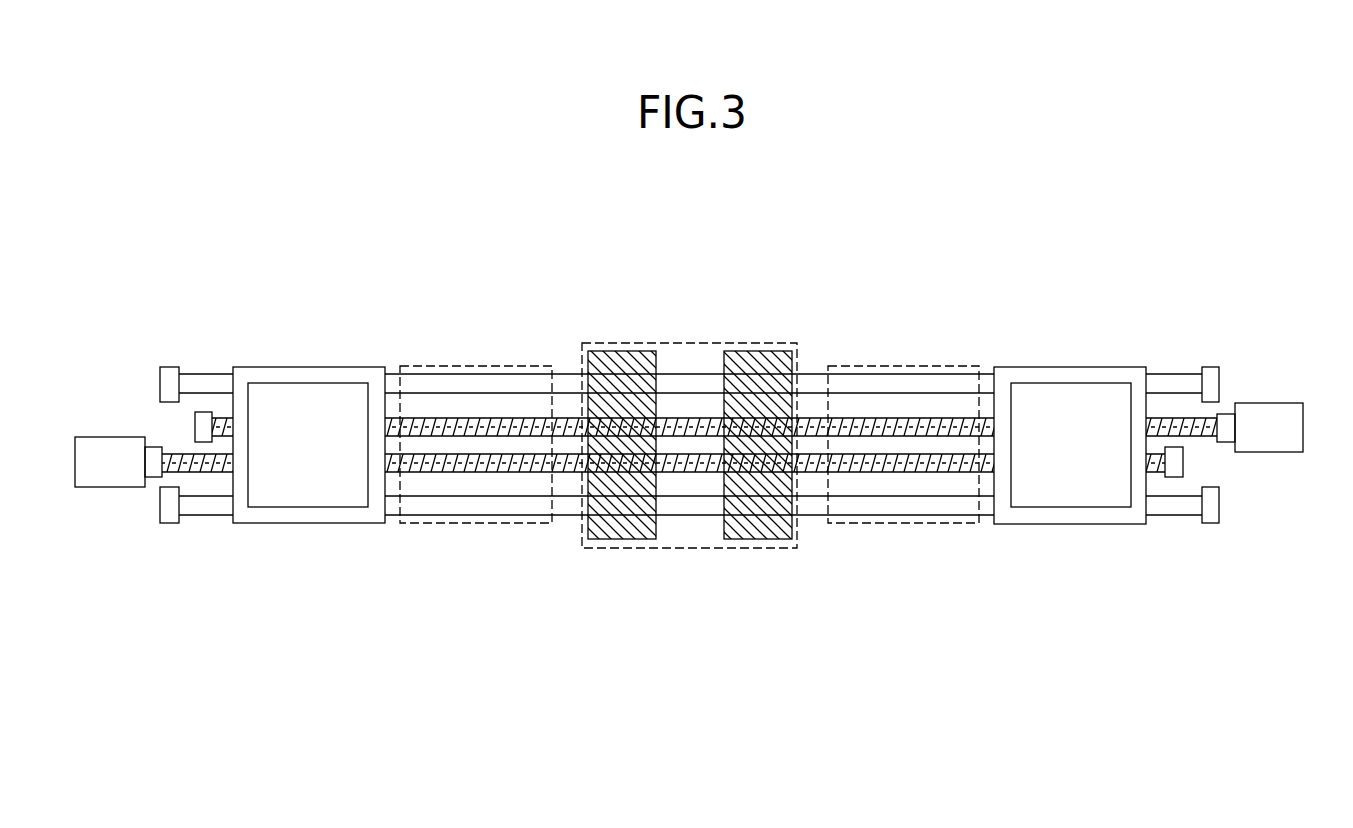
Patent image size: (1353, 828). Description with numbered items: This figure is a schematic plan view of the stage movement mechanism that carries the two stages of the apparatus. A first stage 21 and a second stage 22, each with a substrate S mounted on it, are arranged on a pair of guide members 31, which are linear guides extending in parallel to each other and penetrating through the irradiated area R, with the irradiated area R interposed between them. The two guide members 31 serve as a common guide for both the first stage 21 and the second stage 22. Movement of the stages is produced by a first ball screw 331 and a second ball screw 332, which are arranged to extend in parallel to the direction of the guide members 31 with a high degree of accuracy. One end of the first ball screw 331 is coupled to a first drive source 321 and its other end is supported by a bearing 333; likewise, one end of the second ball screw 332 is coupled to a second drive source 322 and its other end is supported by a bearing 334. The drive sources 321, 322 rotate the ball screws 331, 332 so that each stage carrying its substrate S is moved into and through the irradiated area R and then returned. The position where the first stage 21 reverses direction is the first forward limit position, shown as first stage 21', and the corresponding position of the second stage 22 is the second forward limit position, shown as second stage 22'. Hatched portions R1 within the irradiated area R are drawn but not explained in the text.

The first stage 21 is at (309, 384).
The second stage 22 is at (1070, 389).
The first stage at first forward limit position 21' is at (903, 399).
The second stage at second forward limit position 22' is at (476, 395).
The guide member 31 is at (453, 385).
The first drive source 321 is at (107, 480).
The second drive source 322 is at (1283, 408).
The first ball screw 331 is at (485, 472).
The second ball screw 332 is at (883, 418).
The bearing 333 is at (1175, 477).
The bearing 334 is at (205, 412).
The irradiated area R is at (690, 343).
The sub-region R1 is at (631, 351).
The substrate S is at (323, 405).